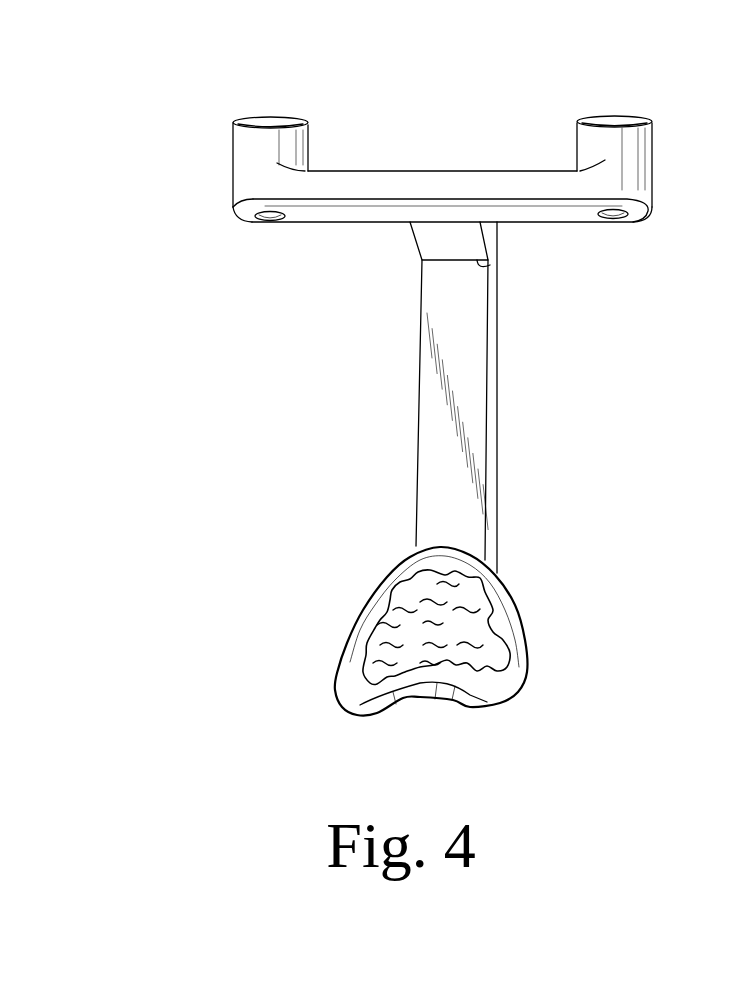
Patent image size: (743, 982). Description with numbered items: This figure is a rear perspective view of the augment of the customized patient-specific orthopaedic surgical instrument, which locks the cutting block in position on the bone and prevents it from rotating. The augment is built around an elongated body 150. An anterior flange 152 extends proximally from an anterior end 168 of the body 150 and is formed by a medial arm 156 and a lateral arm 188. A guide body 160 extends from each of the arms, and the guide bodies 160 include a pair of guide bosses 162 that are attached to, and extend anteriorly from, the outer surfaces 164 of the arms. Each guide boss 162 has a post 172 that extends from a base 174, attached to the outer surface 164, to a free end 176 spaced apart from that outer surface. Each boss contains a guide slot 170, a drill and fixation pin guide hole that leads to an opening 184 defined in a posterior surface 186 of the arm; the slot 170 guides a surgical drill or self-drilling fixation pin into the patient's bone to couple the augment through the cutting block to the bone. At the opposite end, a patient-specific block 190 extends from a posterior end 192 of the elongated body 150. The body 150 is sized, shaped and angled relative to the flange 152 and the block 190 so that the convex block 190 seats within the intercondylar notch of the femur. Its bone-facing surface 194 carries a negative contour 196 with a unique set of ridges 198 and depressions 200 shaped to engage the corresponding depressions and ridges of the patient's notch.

The elongated body 150 is at (486, 393).
The anterior flange 152 is at (411, 179).
The medial arm 156 is at (525, 169).
The guide body 160 is at (283, 130).
The guide boss 162 is at (233, 172).
The outer surface 164 is at (469, 169).
The anterior end 168 is at (481, 262).
The guide slot 170 is at (263, 232).
The post 172 is at (233, 137).
The base 174 is at (242, 214).
The free end 176 is at (255, 117).
The opening 184 is at (272, 220).
The posterior surface 186 is at (356, 222).
The lateral arm 188 is at (358, 177).
The patient-specific block 190 is at (507, 650).
The posterior end 192 is at (495, 560).
The bone-facing surface 194 is at (390, 580).
The negative contour 196 is at (463, 662).
The ridges 198 is at (488, 627).
The depressions 200 is at (513, 683).